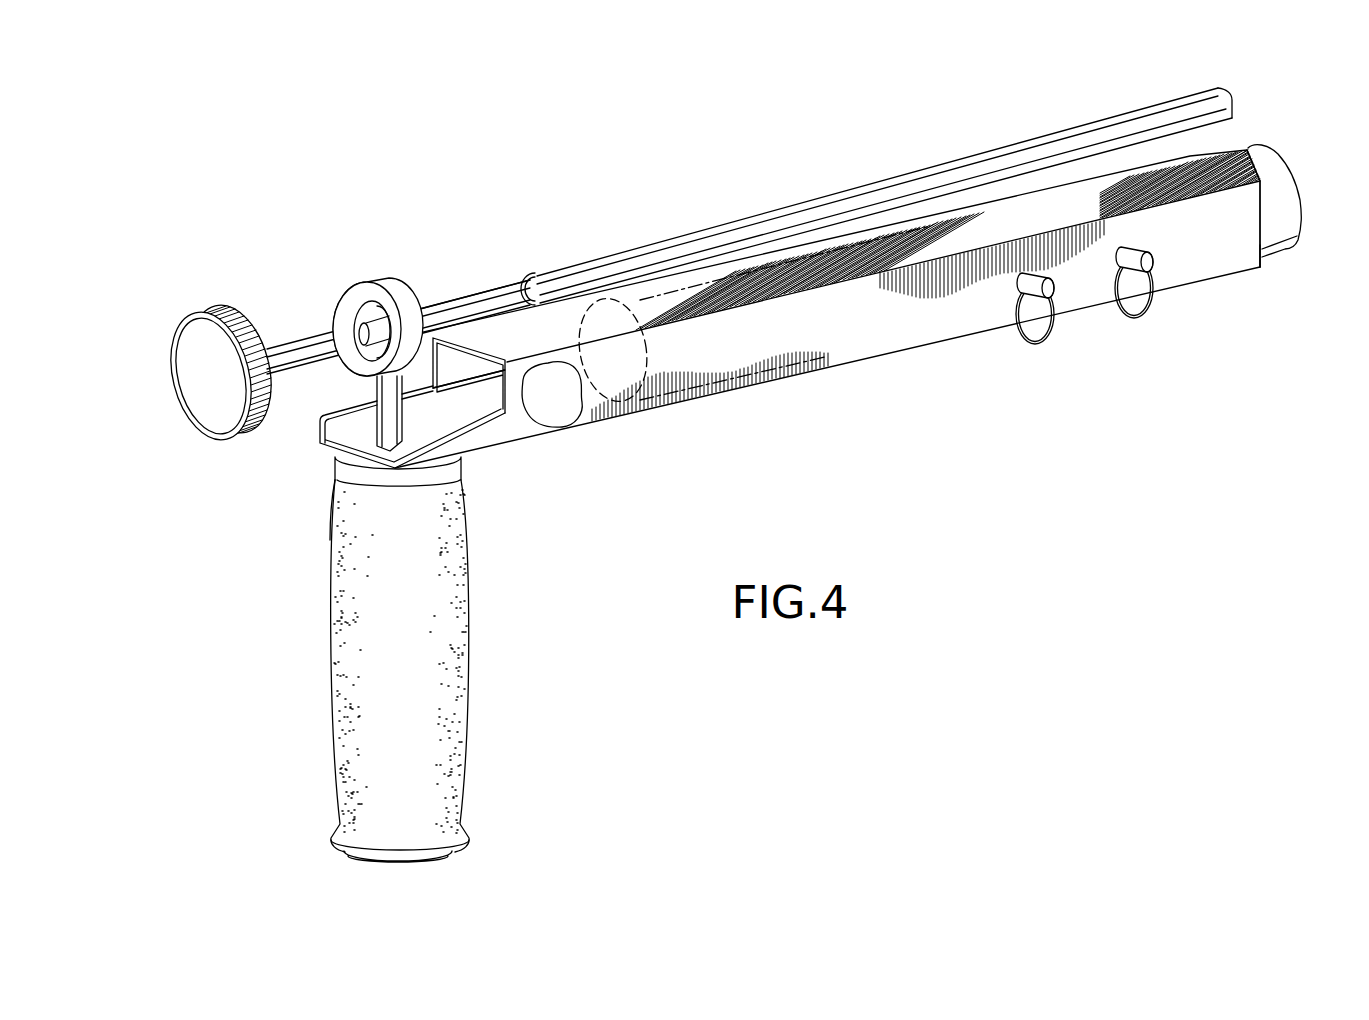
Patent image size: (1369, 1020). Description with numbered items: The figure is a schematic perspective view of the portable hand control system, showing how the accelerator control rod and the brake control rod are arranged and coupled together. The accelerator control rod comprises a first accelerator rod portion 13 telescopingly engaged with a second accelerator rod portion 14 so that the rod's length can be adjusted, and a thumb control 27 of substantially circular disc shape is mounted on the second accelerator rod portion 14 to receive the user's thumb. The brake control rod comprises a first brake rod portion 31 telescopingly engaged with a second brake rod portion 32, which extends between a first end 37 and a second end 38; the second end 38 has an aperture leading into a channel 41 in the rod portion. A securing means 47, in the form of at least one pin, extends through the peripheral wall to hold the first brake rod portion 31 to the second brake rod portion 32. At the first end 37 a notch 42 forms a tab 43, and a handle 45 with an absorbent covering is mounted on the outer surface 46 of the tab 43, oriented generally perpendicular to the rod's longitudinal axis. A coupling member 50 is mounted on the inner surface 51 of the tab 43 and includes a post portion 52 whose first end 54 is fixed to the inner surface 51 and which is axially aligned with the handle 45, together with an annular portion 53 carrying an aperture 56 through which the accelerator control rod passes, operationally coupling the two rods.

The first accelerator rod portion 13 is at (667, 247).
The second accelerator rod portion 14 is at (518, 278).
The thumb control 27 is at (200, 367).
The first brake rod portion 31 is at (1270, 193).
The second brake rod portion 32 is at (1213, 209).
The first end 37 is at (472, 350).
The second end 38 is at (1260, 268).
The channel 41 is at (560, 398).
The notch 42 is at (492, 418).
The tab 43 is at (430, 448).
The handle 45 is at (398, 658).
The outer surface 46 is at (334, 455).
The securing means 47 is at (1147, 270).
The coupling member 50 is at (371, 312).
The inner surface 51 is at (345, 438).
The post portion 52 is at (327, 337).
The annular portion 53 is at (393, 322).
The first end 54 is at (333, 522).
The aperture 56 is at (379, 392).